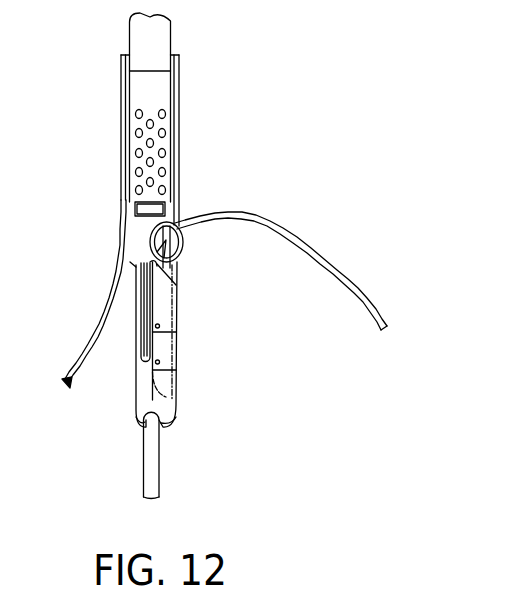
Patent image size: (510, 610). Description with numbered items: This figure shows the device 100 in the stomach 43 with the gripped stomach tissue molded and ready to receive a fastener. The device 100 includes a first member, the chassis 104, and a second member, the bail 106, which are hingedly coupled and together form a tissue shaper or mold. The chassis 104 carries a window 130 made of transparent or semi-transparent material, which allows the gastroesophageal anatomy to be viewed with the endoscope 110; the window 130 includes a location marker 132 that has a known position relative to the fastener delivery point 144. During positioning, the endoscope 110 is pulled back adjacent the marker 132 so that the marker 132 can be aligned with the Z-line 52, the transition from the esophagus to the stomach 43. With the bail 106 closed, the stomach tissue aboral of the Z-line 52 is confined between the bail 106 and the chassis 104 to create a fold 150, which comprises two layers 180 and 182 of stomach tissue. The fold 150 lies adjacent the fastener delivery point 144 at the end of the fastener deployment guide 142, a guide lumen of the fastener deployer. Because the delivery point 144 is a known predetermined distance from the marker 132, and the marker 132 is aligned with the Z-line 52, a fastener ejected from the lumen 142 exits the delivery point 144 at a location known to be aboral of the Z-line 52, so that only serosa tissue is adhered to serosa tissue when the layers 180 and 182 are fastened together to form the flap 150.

The stomach 43 is at (247, 214).
The Z-line 52 is at (136, 206).
The device 100 is at (129, 376).
The chassis 104 is at (138, 342).
The bail 106 is at (168, 288).
The endoscope 110 is at (147, 468).
The window 130 is at (156, 170).
The location marker 132 is at (137, 186).
The fastener deployment guide 142 is at (150, 240).
The delivery point 144 is at (184, 256).
The fold 150 is at (140, 272).
The tissue layer 180 is at (140, 302).
The tissue layer 182 is at (156, 282).